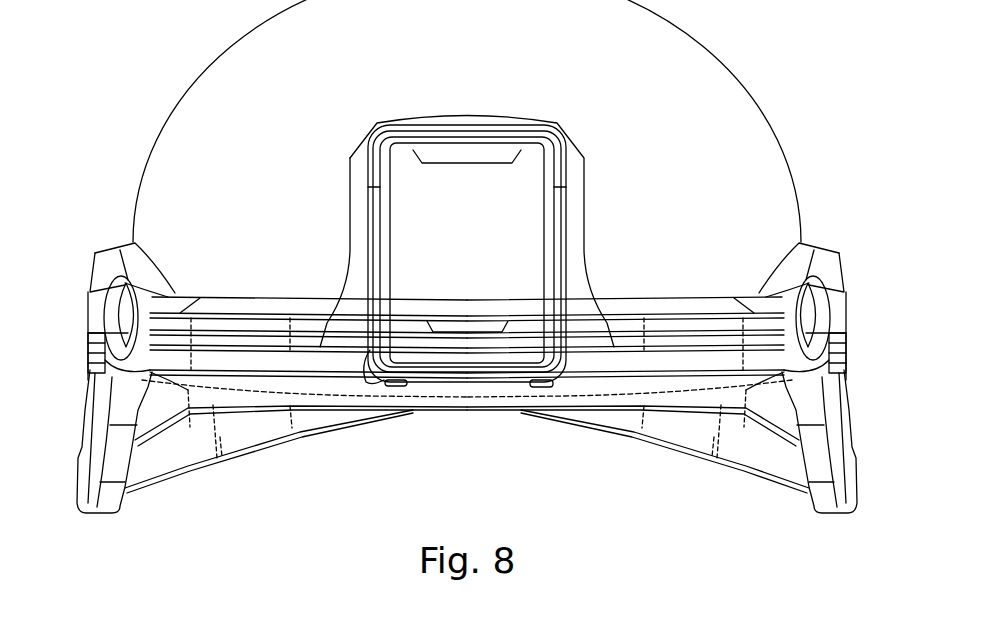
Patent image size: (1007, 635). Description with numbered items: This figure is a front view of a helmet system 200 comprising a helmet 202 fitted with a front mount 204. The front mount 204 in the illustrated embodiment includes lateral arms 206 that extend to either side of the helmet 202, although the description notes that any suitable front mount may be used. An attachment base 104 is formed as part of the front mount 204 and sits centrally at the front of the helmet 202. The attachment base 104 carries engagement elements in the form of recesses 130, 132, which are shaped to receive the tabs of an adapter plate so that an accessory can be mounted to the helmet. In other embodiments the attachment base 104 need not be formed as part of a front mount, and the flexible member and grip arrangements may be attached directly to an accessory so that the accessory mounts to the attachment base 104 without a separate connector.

The helmet system 200 is at (103, 30).
The helmet 202 is at (757, 128).
The front mount 204 is at (594, 122).
The lateral arms 206 is at (708, 300).
The recess 130 is at (443, 158).
The recess 132 is at (458, 326).
The attachment base 104 is at (508, 293).